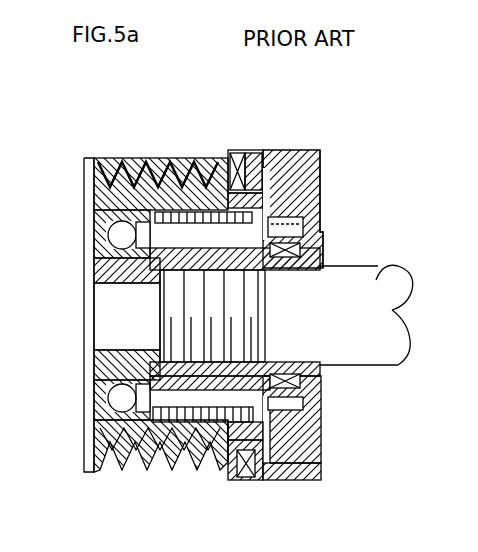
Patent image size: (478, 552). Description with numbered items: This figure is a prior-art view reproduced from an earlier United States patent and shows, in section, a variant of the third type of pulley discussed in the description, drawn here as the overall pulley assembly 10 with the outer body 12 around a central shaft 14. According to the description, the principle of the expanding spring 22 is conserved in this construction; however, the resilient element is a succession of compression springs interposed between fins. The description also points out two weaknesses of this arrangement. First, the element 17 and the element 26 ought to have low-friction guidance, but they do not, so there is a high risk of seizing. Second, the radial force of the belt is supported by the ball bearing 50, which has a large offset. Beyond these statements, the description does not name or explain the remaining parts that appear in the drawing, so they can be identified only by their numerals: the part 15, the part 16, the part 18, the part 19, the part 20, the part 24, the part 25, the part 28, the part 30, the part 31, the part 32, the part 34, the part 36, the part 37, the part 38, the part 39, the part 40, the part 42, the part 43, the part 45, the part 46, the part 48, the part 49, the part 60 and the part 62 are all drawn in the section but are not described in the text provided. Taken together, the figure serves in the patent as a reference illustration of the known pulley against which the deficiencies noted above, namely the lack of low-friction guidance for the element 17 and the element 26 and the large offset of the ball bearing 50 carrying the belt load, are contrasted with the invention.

The clutch assembly 10 is at (183, 128).
The housing 12 is at (143, 157).
The shaft 14 is at (386, 272).
The splined portion 15 is at (370, 287).
The hub 16 is at (124, 292).
The element 17 is at (337, 245).
The mounting plate 18 is at (80, 160).
The shaft end 19 is at (396, 351).
The ball bearing 20 is at (78, 233).
The expanding spring 22 is at (122, 175).
The mounting plate 24 is at (78, 361).
The bearing support 25 is at (294, 443).
The element 26 is at (100, 264).
The armature 28 is at (194, 274).
The housing block 30 is at (258, 208).
The lower housing block 31 is at (318, 456).
The seal 32 is at (254, 177).
The seal 34 is at (294, 427).
The retaining ring 36 is at (90, 180).
The seal assembly 37 is at (255, 149).
The coil 38 is at (214, 462).
The seal 39 is at (248, 471).
The gear teeth 40 is at (142, 441).
The spring 42 is at (304, 398).
The bearing 43 is at (100, 221).
The housing flange 45 is at (312, 454).
The hub 46 is at (95, 379).
The bearing 48 is at (100, 413).
The inner race 49 is at (100, 253).
The ball bearing 50 is at (121, 397).
The spring 60 is at (305, 231).
The teeth 62 is at (172, 447).